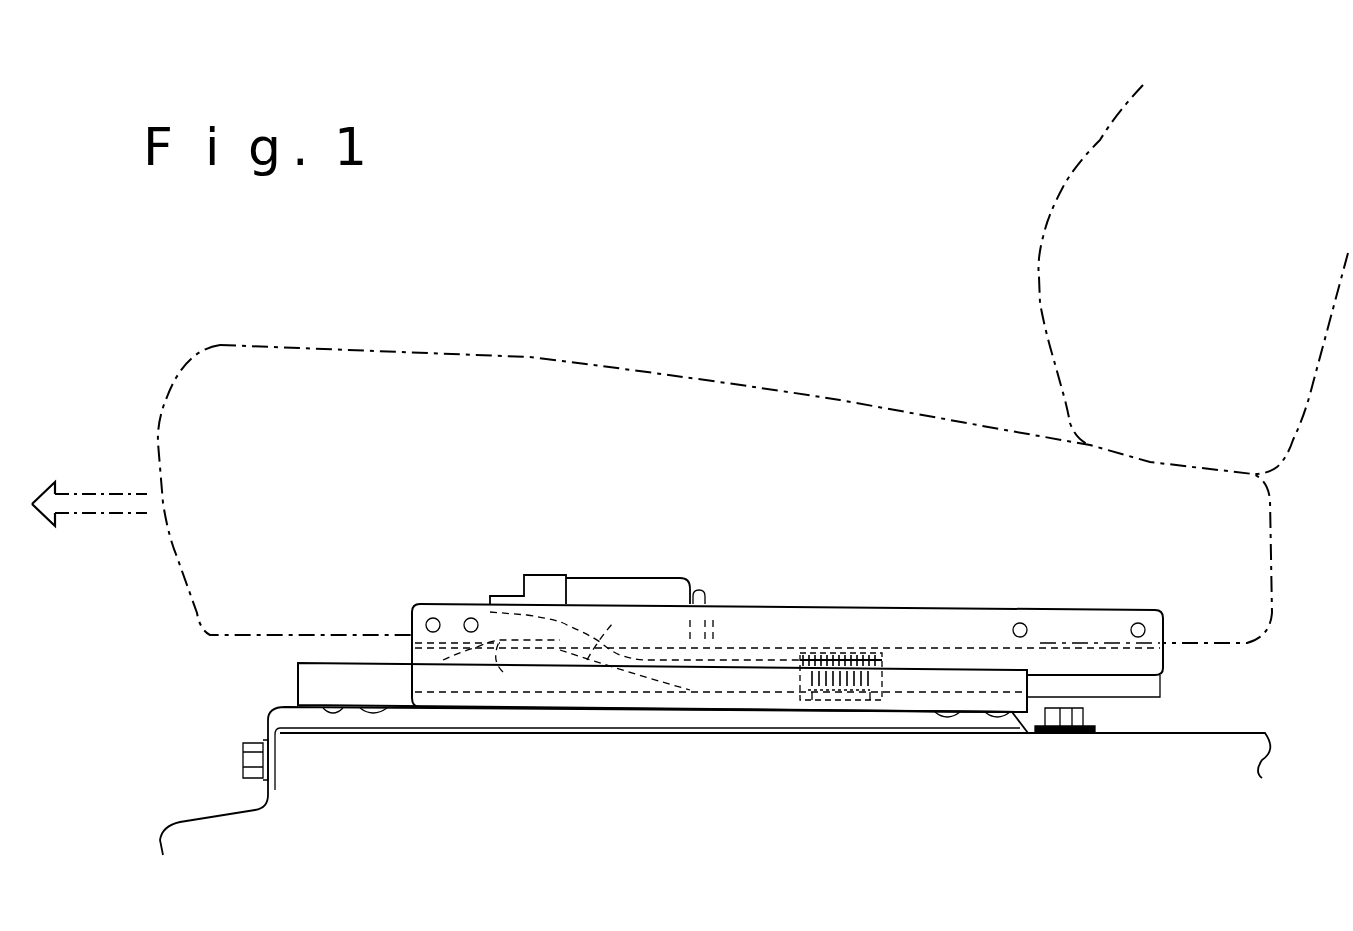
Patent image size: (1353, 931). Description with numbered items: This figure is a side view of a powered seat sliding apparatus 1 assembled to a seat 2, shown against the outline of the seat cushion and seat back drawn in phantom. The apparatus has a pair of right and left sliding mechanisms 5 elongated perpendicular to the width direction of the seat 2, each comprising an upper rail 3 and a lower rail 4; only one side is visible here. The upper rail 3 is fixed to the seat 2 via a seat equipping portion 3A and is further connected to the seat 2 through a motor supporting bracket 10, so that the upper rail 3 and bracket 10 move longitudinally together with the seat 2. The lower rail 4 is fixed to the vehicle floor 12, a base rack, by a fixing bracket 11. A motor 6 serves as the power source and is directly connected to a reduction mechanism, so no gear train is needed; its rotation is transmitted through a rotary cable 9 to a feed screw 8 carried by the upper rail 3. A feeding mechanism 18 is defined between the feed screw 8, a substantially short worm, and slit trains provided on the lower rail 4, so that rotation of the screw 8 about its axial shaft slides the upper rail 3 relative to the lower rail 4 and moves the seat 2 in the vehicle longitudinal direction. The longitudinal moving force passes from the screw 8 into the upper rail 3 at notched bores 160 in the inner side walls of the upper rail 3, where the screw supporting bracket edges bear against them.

The powered seat sliding apparatus 1 is at (743, 510).
The seat 2 is at (630, 370).
The upper rail 3 is at (978, 622).
The seat equipping portion 3A is at (471, 618).
The lower rail 4 is at (683, 692).
The sliding mechanism 5 is at (380, 608).
The motor 6 is at (588, 578).
The feed screw 8 is at (843, 705).
The rotary cable 9 is at (612, 640).
The motor supporting bracket 10 is at (503, 672).
The fixing bracket 11 is at (268, 716).
The vehicle floor 12 is at (1200, 733).
The feeding mechanism 18 is at (832, 640).
The notched bores 160 is at (873, 660).